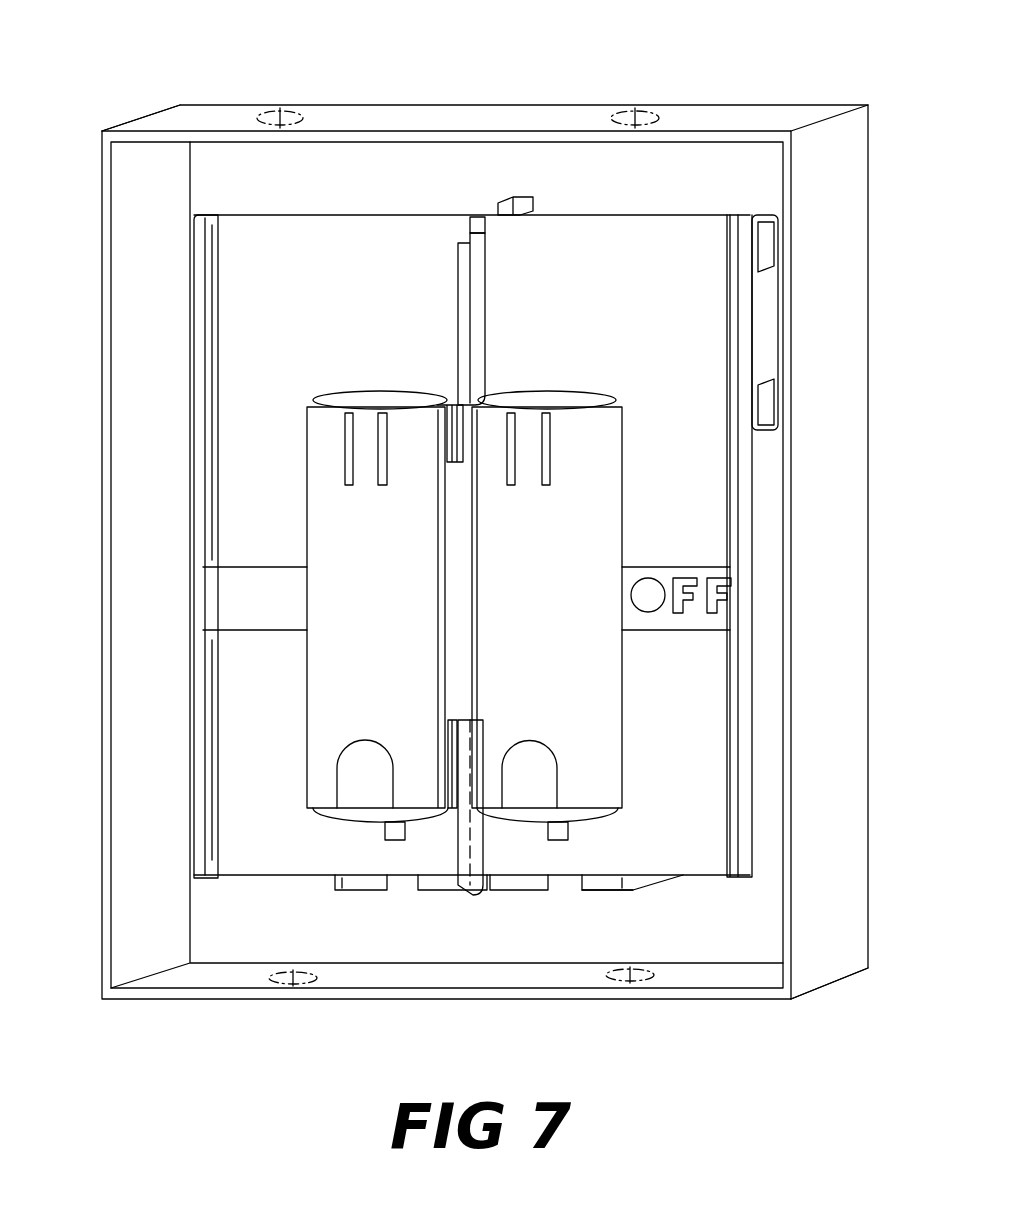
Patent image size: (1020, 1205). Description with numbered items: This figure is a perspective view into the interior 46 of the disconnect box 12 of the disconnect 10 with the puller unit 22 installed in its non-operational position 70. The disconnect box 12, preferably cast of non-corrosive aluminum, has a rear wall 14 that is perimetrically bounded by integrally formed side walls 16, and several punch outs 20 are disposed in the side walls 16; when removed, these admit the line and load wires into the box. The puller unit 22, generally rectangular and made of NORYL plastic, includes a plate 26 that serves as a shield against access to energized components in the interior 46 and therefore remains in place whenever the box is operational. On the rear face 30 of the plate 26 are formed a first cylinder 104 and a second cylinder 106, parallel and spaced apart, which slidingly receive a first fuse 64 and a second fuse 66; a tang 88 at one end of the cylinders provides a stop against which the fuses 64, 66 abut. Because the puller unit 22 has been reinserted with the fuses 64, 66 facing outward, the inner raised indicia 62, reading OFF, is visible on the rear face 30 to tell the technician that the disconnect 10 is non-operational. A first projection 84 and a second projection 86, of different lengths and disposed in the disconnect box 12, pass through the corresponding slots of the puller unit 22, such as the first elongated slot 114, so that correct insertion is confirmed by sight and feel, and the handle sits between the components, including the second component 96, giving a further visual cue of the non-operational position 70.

The disconnect 10 is at (163, 50).
The disconnect box 12 is at (786, 48).
The rear wall 14 is at (488, 948).
The side walls 16 is at (125, 502).
The punch outs 20 is at (280, 118).
The puller unit 22 is at (675, 203).
The plate 26 is at (332, 215).
The rear face 30 is at (660, 352).
The interior 46 is at (297, 908).
The inner raised indicia 62 is at (690, 578).
The first fuse 64 is at (403, 393).
The second fuse 66 is at (565, 393).
The non-operational position 70 is at (425, 188).
The first projection 84 is at (466, 290).
The second projection 86 is at (478, 838).
The tang 88 is at (392, 835).
The second component 96 is at (612, 895).
The first cylinder 104 is at (388, 620).
The second cylinder 106 is at (568, 615).
The first elongated slot 114 is at (484, 224).